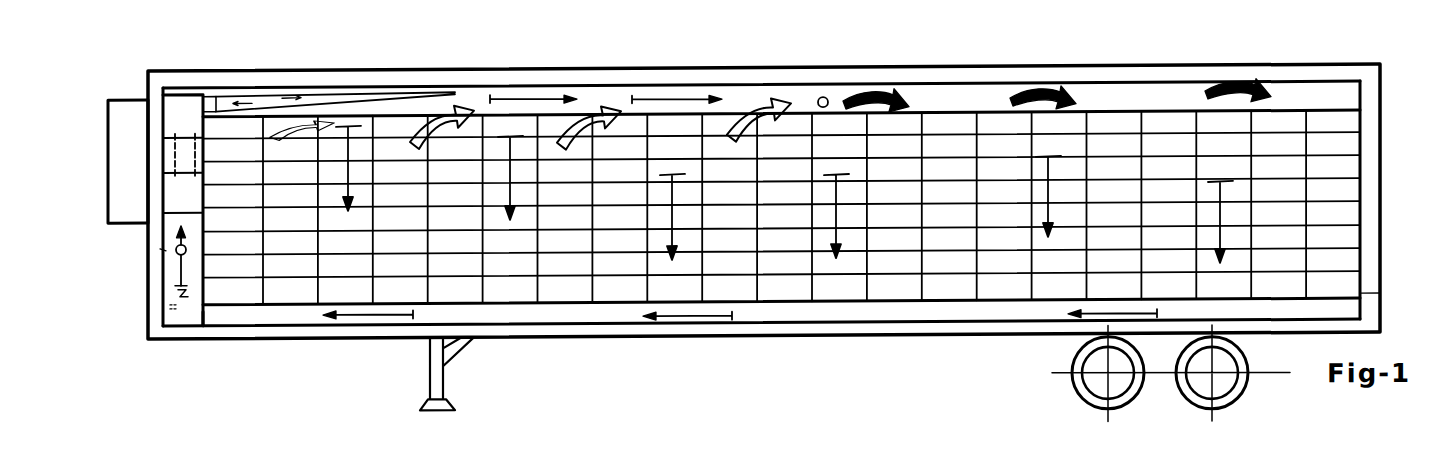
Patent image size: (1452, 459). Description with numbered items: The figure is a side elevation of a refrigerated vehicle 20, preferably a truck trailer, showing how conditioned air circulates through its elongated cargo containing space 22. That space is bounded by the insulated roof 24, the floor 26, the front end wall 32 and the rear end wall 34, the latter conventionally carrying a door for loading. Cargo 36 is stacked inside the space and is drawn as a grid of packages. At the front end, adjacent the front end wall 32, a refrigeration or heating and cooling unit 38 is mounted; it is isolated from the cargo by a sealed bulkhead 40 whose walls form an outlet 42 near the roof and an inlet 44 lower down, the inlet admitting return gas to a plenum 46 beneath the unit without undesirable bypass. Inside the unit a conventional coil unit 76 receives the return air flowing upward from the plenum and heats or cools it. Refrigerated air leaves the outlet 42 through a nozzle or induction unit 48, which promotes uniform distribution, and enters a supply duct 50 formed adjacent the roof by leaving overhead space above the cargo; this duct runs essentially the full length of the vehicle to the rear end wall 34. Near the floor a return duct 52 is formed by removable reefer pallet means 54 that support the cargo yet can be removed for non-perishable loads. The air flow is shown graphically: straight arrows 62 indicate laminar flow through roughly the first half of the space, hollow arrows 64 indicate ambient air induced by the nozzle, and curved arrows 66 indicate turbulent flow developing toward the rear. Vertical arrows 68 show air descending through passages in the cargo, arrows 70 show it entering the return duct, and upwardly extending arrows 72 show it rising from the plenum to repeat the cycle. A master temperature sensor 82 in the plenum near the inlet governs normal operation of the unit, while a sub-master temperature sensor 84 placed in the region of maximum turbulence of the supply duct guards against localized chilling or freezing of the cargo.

The vehicle 20 is at (1322, 70).
The cargo containing space 22 is at (1270, 173).
The roof 24 is at (1073, 85).
The floor 26 is at (858, 339).
The front end wall 32 is at (141, 84).
The rear end wall 34 is at (1382, 219).
The cargo 36 is at (1010, 213).
The refrigeration unit 38 is at (108, 100).
The bulkhead 40 is at (192, 230).
The outlet 42 is at (210, 98).
The inlet 44 is at (200, 318).
The plenum 46 is at (175, 312).
The nozzle 48 is at (317, 94).
The supply duct 50 is at (735, 101).
The return duct 52 is at (600, 318).
The reefer pallet means 54 is at (1328, 297).
The straight arrows 62 is at (673, 98).
The hollow arrows 64 is at (452, 104).
The curved arrows 66 is at (1233, 93).
The vertical arrows 68 is at (837, 221).
The arrows 70 is at (375, 316).
The upwardly extending arrows 72 is at (137, 259).
The coil unit 76 is at (180, 156).
The master temperature sensor 82 is at (163, 251).
The sub-master temperature sensor 84 is at (828, 101).